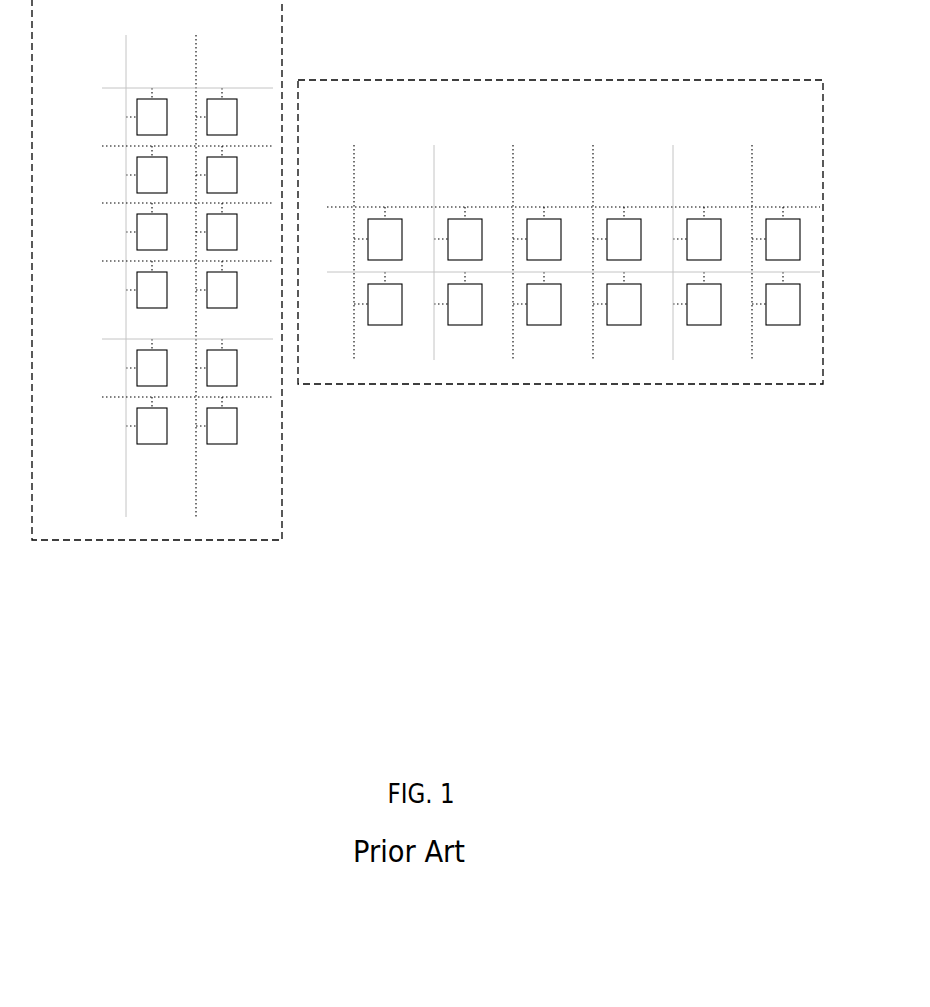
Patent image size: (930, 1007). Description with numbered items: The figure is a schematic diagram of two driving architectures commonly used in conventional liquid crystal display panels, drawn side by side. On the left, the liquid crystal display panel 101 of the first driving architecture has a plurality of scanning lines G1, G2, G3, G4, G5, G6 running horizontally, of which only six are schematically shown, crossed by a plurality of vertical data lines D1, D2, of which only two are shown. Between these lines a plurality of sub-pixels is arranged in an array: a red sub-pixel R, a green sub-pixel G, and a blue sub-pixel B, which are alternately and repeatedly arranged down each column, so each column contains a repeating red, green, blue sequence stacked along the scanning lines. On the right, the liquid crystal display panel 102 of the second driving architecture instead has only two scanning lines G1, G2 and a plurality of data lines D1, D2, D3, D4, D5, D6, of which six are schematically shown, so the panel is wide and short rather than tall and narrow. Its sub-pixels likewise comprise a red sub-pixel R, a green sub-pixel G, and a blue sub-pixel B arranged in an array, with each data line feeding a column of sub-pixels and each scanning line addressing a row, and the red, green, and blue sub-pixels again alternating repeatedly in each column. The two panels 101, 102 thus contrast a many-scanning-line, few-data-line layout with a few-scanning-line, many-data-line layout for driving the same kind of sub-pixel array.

The liquid crystal display panel of the first driving architecture 101 is at (135, 540).
The liquid crystal display panel of the second driving architecture 102 is at (472, 384).
The data line D1 is at (244, 263).
The data line D2 is at (318, 263).
The data line D3 is at (519, 239).
The data line D4 is at (598, 239).
The data line D5 is at (687, 239).
The data line D6 is at (767, 239).
The scanning line G1 is at (446, 147).
The scanning line G2 is at (446, 211).
The scanning line G3 is at (172, 203).
The scanning line G4 is at (172, 261).
The scanning line G5 is at (172, 339).
The scanning line G6 is at (172, 392).